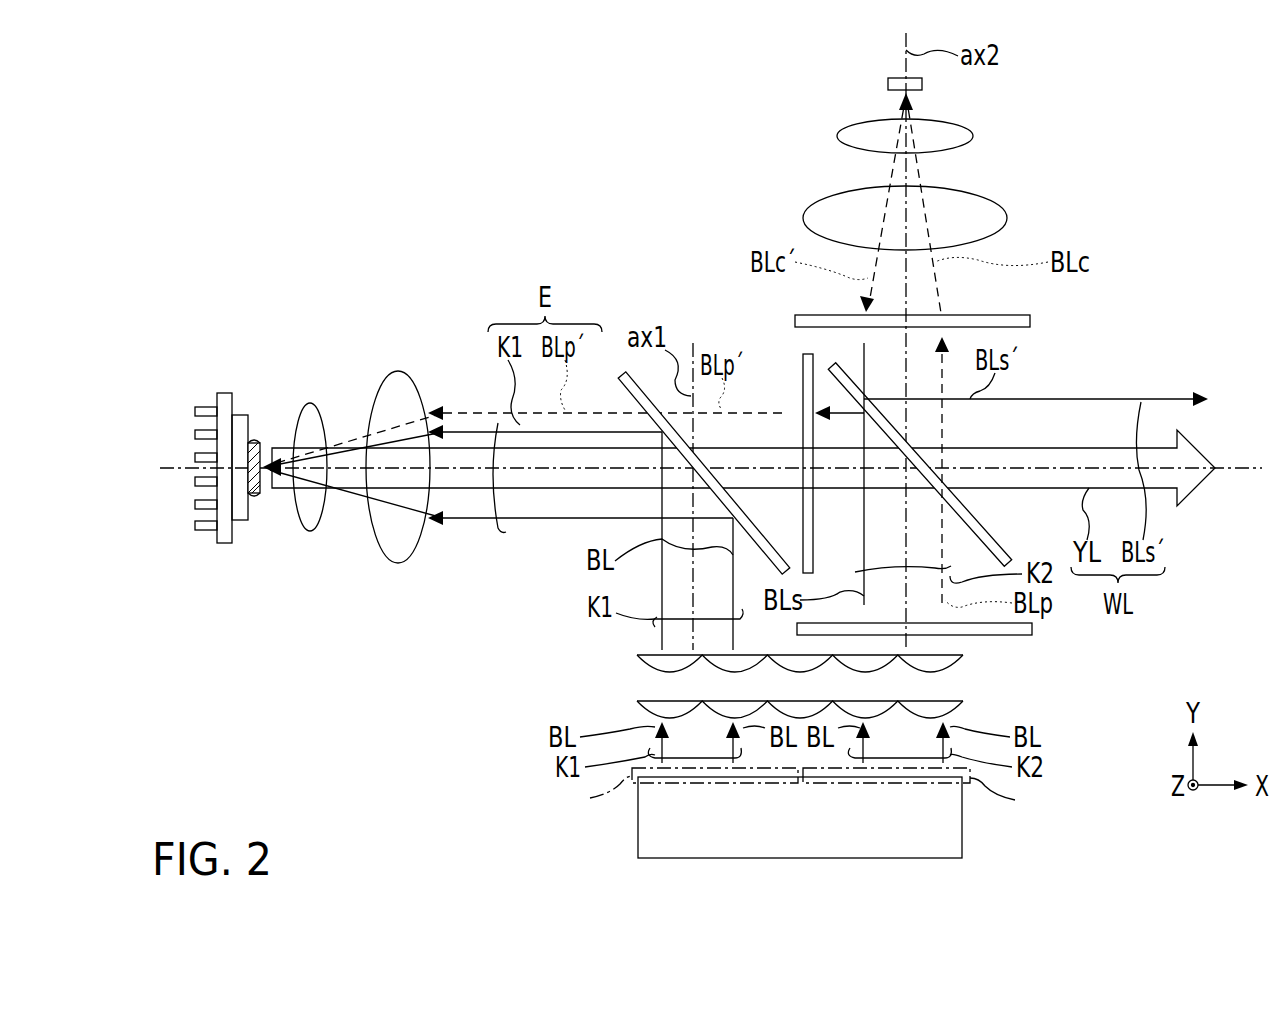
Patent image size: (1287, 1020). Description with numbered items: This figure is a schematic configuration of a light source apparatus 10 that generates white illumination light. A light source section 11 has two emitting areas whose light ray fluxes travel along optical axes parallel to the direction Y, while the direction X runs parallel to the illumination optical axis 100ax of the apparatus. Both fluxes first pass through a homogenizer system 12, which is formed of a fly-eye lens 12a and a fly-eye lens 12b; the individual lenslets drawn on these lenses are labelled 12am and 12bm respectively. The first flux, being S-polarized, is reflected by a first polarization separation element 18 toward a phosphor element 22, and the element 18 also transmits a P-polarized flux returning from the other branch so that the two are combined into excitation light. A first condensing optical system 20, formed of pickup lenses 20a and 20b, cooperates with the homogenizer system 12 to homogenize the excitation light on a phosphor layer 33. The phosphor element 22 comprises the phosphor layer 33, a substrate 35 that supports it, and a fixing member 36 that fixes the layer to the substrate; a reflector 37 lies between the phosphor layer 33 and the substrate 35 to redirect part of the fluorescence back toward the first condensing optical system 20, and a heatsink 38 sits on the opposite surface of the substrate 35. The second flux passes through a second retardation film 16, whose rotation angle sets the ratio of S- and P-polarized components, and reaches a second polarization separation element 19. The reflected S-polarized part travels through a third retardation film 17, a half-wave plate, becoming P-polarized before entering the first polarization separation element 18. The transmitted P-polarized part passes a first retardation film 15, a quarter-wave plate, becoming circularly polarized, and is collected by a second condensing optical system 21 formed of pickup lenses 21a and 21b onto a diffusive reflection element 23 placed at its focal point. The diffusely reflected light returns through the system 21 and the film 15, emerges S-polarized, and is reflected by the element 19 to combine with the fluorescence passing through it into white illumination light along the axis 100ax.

The light source apparatus 10 is at (630, 223).
The light source section 11 is at (975, 840).
The homogenizer system 12 is at (828, 684).
The fly-eye lens 12a is at (803, 707).
The fly-eye lens 12b is at (803, 661).
The microlens of first lens array 12am is at (640, 707).
The microlens of second lens array 12bm is at (640, 661).
The first retardation film 15 is at (1005, 316).
The second retardation film 16 is at (1032, 630).
The third retardation film 17 is at (803, 358).
The first polarization separation element 18 is at (752, 529).
The second polarization separation element 19 is at (985, 531).
The first condensing optical system 20 is at (350, 525).
The pickup lens 20a is at (380, 530).
The pickup lens 20b is at (310, 530).
The second condensing optical system 21 is at (969, 168).
The pickup lens 21a is at (950, 205).
The pickup lens 21b is at (950, 130).
The phosphor element 22 is at (217, 488).
The diffusive reflection element 23 is at (888, 84).
The phosphor layer 33 is at (259, 444).
The substrate 35 is at (241, 415).
The fixing member 36 is at (255, 494).
The reflector 37 is at (242, 472).
The heatsink 38 is at (223, 393).
The illumination optical axis 100ax is at (1225, 466).